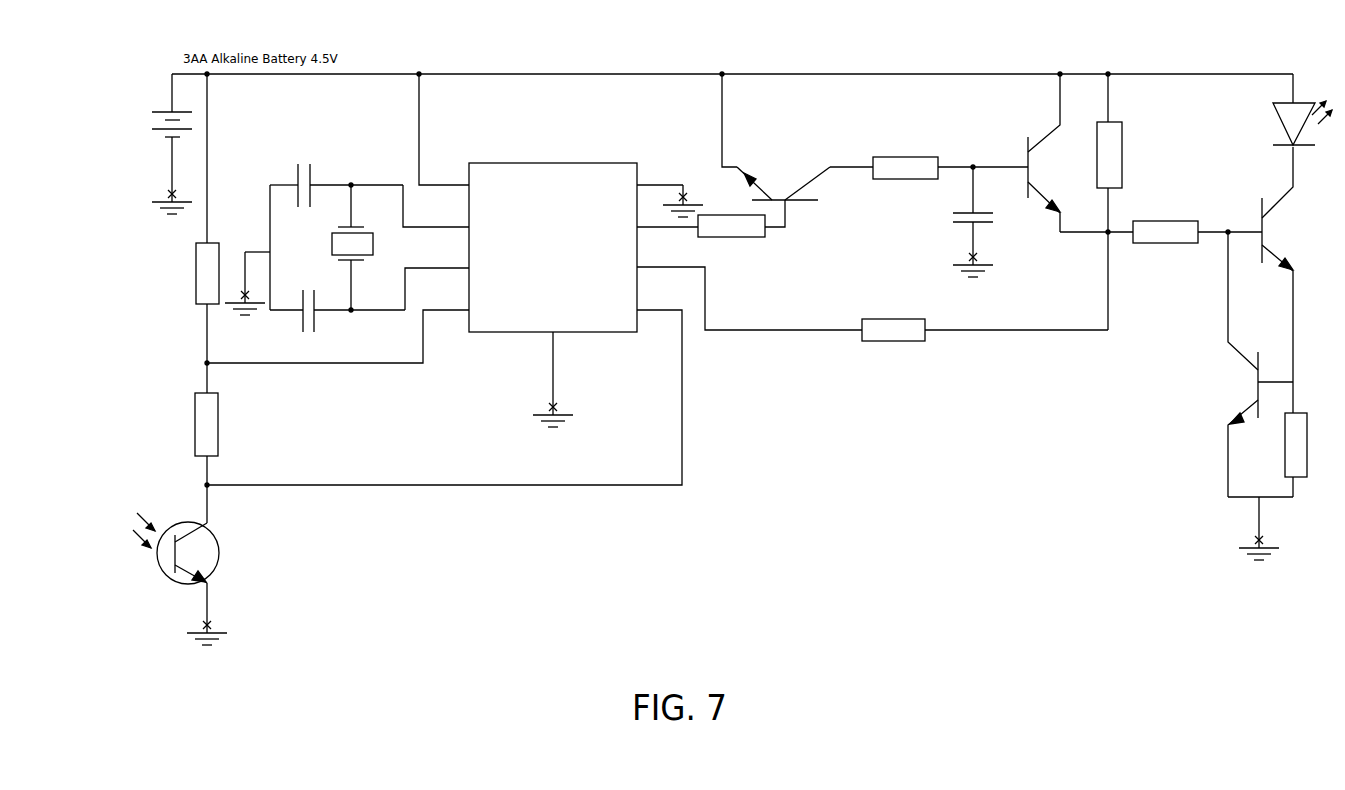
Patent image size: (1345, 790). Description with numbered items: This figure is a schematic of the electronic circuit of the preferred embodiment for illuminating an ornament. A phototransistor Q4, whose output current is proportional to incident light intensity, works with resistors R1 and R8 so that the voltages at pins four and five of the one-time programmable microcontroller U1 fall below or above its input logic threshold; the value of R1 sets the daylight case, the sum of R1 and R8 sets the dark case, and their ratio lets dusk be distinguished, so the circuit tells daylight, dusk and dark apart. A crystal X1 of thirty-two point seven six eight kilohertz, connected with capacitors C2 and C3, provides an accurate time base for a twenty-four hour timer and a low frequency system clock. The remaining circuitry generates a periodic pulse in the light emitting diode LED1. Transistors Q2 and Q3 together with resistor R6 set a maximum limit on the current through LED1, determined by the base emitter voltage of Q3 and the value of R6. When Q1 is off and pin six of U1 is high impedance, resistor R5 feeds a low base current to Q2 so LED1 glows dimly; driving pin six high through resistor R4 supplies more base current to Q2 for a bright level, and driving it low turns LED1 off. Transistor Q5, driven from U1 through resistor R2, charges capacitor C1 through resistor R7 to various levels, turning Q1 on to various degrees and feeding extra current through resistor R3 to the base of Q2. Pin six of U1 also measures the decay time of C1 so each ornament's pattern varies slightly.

The resistor R1 is at (199, 273).
The resistor 10K R2 is at (731, 240).
The resistor 10K R3 is at (1165, 244).
The resistor 1K R4 is at (893, 343).
The resistor R5 is at (1100, 202).
The resistor R6 is at (1287, 455).
The resistor 1.5meg R7 is at (905, 180).
The resistor R8 is at (219, 424).
The capacitor C1 is at (972, 222).
The capacitor 8.2pf C2 is at (336, 173).
The capacitor 8.2pf C3 is at (337, 320).
The crystal X1 is at (367, 247).
The microcontroller U1 is at (551, 248).
The transistor Q1 is at (1014, 153).
The transistor Q2 is at (1254, 280).
The transistor Q3 is at (1221, 424).
The phototransistor Q4 is at (241, 548).
The transistor Q5 is at (783, 169).
The light emitting diode LED1 is at (1277, 109).